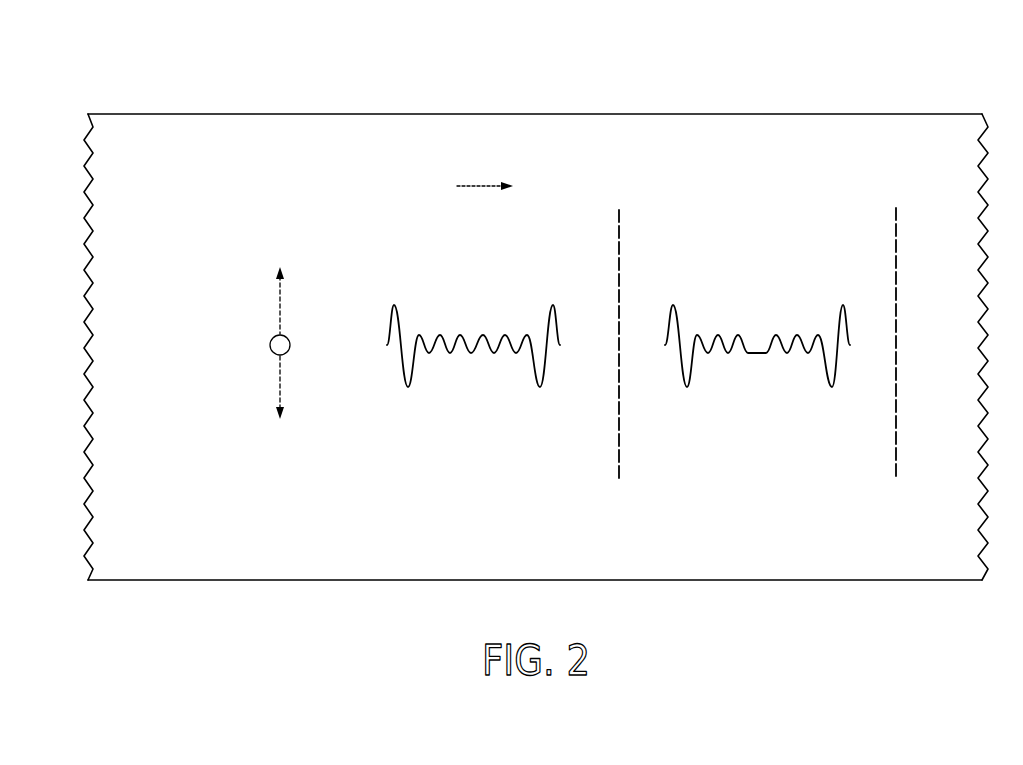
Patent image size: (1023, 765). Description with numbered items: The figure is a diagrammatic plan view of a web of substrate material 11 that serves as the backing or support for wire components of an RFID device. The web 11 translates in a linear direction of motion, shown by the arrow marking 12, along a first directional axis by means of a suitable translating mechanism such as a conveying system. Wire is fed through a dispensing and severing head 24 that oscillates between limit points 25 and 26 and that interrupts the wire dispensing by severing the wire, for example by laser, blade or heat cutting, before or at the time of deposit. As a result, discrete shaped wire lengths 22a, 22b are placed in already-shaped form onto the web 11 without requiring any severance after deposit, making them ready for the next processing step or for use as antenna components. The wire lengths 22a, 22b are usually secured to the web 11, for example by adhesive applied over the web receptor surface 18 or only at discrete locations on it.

The web of substrate material 11 is at (288, 110).
The arrow marking 12 is at (474, 185).
The web receptor surface 18 is at (260, 200).
The discrete shaped wire length 22a is at (471, 354).
The discrete shaped wire length 22b is at (757, 354).
The dispensing and severing head 24 is at (269, 345).
The limit point 25 is at (277, 278).
The limit point 26 is at (278, 409).